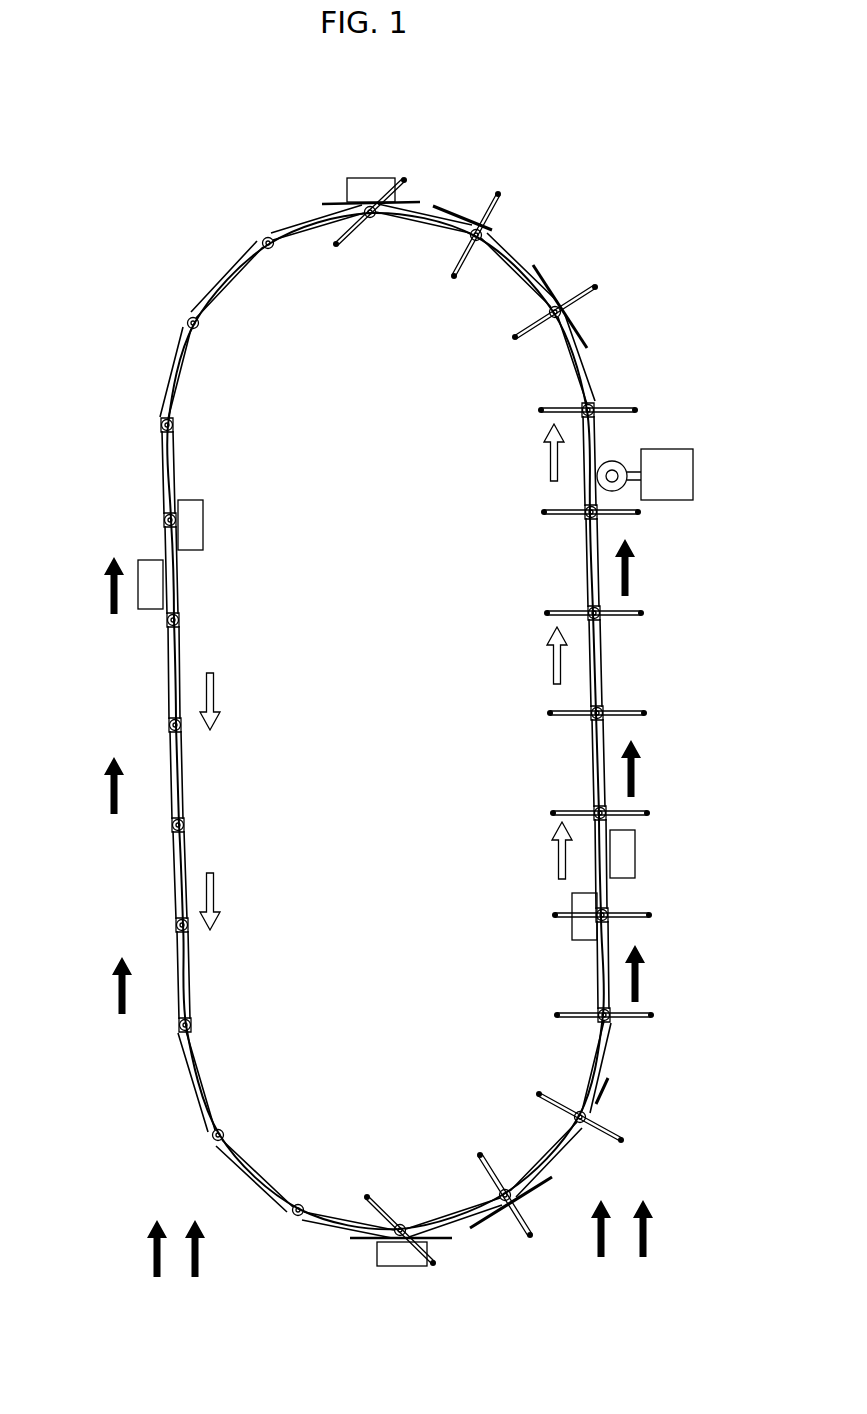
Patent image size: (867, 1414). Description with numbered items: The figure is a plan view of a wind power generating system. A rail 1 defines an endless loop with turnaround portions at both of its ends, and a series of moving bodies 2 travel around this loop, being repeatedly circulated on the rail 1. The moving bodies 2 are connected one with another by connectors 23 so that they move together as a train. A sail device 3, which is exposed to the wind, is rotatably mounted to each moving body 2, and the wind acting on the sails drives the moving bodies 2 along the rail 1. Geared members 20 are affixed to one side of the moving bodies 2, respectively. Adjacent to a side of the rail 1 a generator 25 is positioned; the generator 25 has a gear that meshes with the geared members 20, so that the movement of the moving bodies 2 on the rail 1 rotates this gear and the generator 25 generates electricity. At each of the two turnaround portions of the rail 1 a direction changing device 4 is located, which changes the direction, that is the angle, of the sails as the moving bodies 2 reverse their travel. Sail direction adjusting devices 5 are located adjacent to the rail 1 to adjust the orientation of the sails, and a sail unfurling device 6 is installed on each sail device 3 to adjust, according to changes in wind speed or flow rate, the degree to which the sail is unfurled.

The rail 1 is at (190, 948).
The moving body 2 is at (186, 822).
The sail device 3 is at (168, 725).
The direction changing device 4 is at (375, 180).
The sail direction adjusting device 5 is at (150, 610).
The sail unfurling device 6 is at (206, 501).
The geared member 20 is at (440, 206).
The connector 23 is at (527, 261).
The generator 25 is at (670, 449).